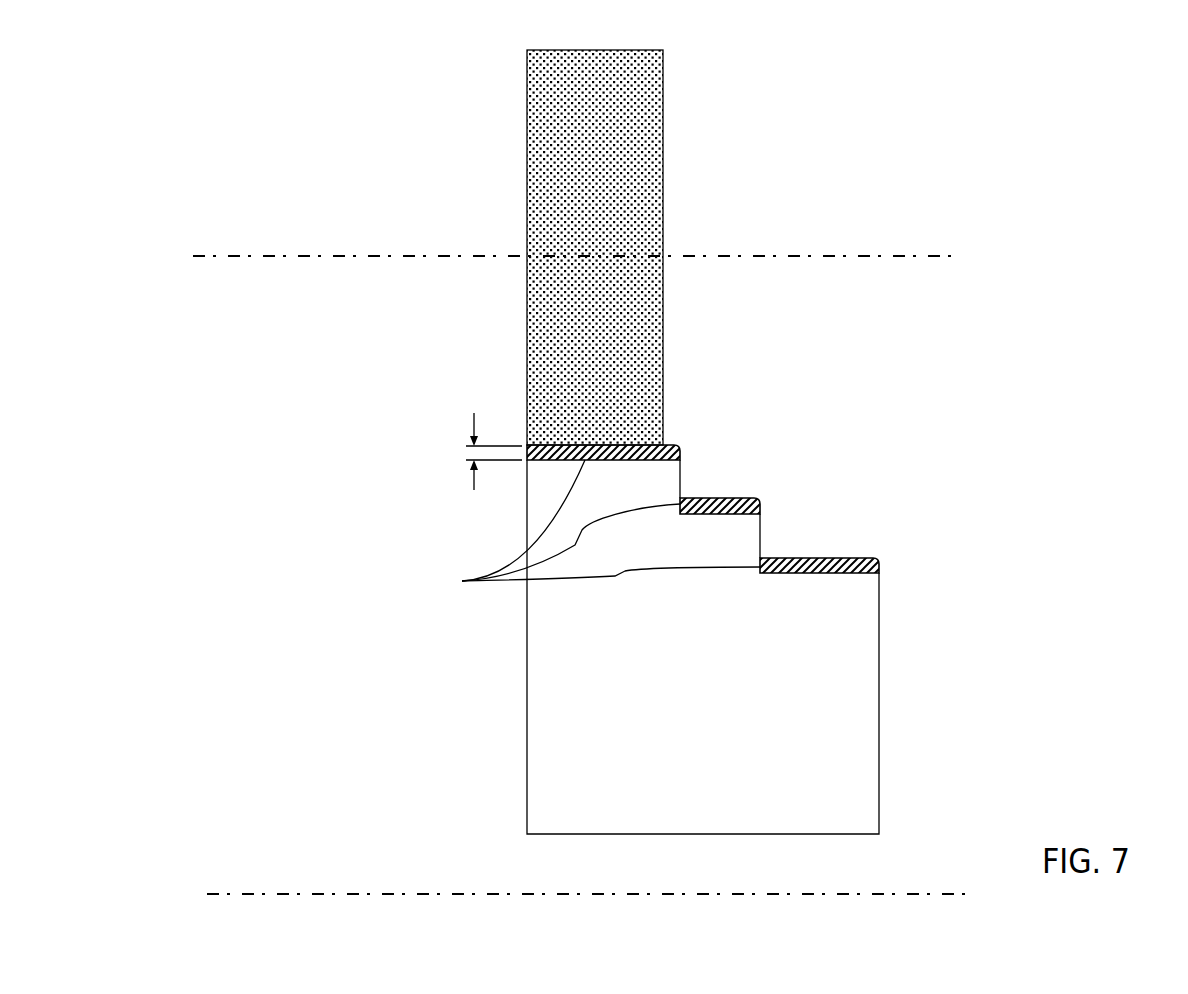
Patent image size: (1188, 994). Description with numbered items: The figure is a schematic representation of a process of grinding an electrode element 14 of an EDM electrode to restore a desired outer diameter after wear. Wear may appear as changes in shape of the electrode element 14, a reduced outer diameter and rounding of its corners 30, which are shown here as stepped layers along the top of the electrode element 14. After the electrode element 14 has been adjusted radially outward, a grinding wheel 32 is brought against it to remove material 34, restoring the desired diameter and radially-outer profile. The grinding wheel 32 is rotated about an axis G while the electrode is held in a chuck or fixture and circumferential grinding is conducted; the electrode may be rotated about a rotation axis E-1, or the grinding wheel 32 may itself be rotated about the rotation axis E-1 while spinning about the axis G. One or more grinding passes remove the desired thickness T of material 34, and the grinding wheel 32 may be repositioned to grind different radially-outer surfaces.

The electrode element 14 is at (701, 753).
The corners 30 is at (696, 445).
The grinding wheel 32 is at (637, 155).
The material 34 is at (590, 527).
The thickness T is at (484, 443).
The axis G is at (231, 255).
The rotation axis E-1 is at (248, 893).